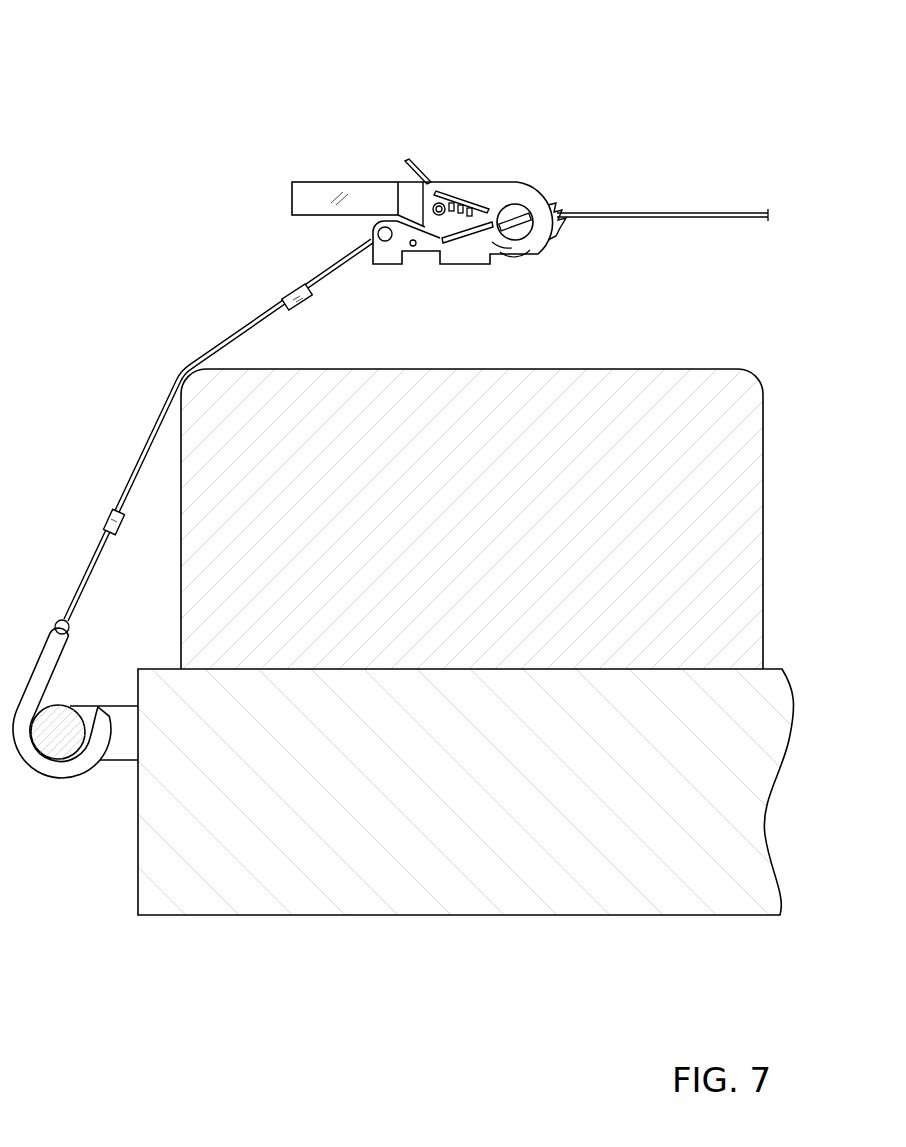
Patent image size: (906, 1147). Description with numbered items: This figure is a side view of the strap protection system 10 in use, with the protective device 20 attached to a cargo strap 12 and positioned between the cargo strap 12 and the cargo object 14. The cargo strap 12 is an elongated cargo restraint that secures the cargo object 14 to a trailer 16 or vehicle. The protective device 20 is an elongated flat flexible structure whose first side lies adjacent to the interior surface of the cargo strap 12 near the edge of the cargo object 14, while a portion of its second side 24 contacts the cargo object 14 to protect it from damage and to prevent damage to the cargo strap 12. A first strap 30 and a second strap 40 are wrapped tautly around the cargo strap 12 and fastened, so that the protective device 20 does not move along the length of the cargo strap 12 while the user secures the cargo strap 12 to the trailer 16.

The strap protection system 10 is at (390, 396).
The cargo strap 12 is at (323, 272).
The cargo object 14 is at (625, 420).
The trailer 16 is at (185, 833).
The protective device 20 is at (290, 322).
The second side 24 is at (237, 341).
The first strap 30 is at (287, 291).
The second strap 40 is at (103, 514).